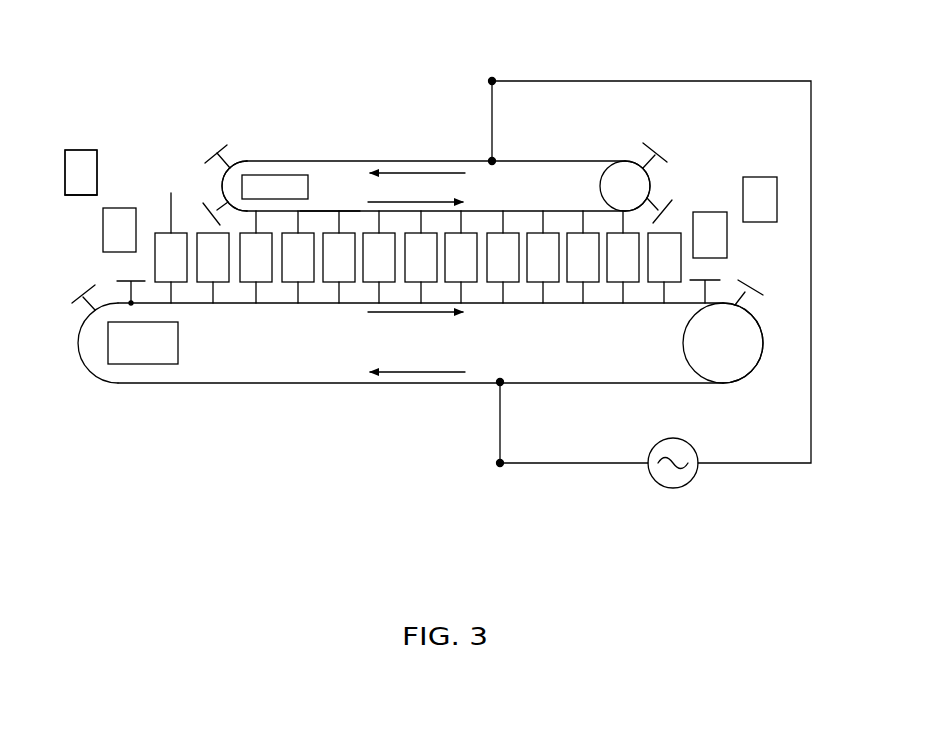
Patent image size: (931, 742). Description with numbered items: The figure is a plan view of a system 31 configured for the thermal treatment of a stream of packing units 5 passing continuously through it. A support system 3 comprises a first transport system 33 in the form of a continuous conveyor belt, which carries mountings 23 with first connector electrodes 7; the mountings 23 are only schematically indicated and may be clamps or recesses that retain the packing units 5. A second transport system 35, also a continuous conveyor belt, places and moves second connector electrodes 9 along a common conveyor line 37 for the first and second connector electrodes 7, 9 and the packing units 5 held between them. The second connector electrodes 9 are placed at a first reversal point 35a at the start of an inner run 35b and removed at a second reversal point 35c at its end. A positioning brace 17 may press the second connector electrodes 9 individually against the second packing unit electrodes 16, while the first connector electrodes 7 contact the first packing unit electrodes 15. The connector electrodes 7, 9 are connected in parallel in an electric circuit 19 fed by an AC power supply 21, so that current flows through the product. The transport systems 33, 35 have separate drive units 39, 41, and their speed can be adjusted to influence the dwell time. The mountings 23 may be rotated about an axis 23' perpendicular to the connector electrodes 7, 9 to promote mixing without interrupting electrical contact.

The system 31 is at (283, 63).
The first transport system 33 is at (252, 384).
The second transport system 35 is at (384, 160).
The first reversal point 35a is at (250, 158).
The inner run 35b is at (328, 210).
The second reversal point 35c is at (619, 157).
The drive unit 41 is at (294, 176).
The drive unit 39 is at (155, 355).
The support system 3 is at (772, 362).
The electric circuit 19 is at (746, 81).
The AC power supply 21 is at (683, 487).
The second packing unit electrode 16 is at (78, 147).
The packing unit 5 is at (88, 170).
The first packing unit electrode 15 is at (77, 200).
The conveyor line 37 is at (131, 263).
The axis 23' is at (150, 194).
The mounting 23 is at (58, 324).
The positioning brace 17 is at (220, 172).
The second connector electrode 9 is at (209, 160).
The first connector electrode 7 is at (75, 298).